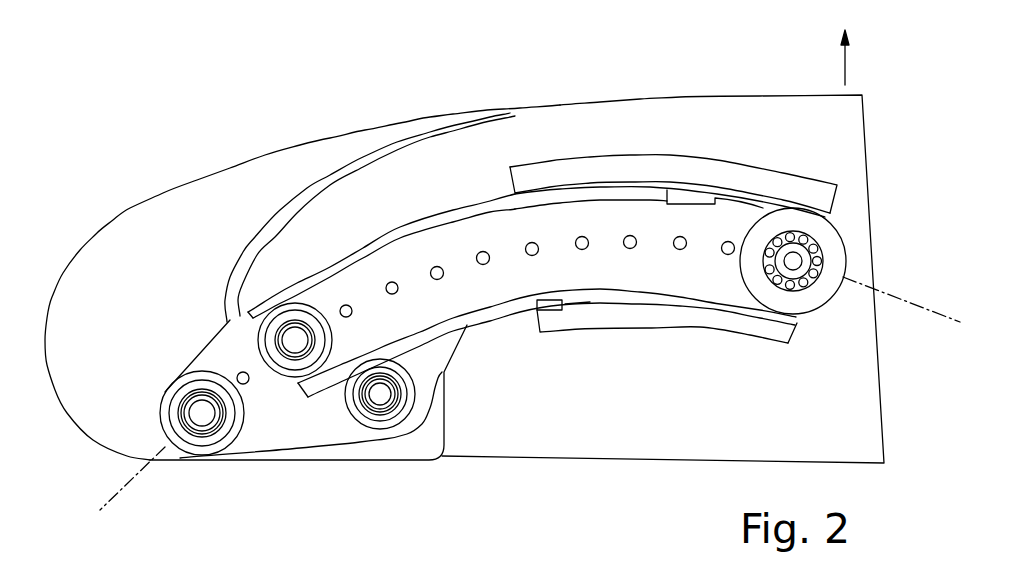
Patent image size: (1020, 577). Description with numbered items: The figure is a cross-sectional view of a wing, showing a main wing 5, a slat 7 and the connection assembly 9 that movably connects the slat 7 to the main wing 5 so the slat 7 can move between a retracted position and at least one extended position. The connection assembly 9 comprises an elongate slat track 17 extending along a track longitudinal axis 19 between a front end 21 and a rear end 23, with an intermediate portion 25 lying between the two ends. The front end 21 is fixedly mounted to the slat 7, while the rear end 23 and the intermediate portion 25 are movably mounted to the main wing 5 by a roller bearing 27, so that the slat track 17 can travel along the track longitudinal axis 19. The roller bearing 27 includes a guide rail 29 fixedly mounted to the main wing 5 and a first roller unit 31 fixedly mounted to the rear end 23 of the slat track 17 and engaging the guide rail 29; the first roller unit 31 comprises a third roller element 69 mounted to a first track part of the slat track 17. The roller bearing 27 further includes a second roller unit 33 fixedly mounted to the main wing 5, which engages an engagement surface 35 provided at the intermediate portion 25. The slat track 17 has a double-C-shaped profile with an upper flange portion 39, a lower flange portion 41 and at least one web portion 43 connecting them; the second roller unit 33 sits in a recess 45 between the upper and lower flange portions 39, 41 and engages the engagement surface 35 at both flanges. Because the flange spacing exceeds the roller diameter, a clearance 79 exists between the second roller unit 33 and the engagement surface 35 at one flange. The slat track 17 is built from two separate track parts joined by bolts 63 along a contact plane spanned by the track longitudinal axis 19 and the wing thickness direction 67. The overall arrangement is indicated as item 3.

The device 3 is at (117, 168).
The main wing 5 is at (752, 403).
The slat 7 is at (120, 324).
The connection assembly 9 is at (540, 146).
The slat track 17 is at (453, 228).
The track longitudinal axis 19 is at (938, 322).
The front end 21 is at (299, 430).
The rear end 23 is at (763, 212).
The intermediate portion 25 is at (506, 280).
The roller bearing 27 is at (549, 241).
The guide rail 29 is at (719, 172).
The first roller unit 31 is at (817, 293).
The second roller unit 33 is at (297, 312).
The engagement surface 35 is at (502, 213).
The upper flange portion 39 is at (393, 232).
The lower flange portion 41 is at (570, 293).
The web portion 43 is at (552, 267).
The recess 45 is at (596, 252).
The bolts 63 is at (346, 305).
The wing thickness direction 67 is at (848, 62).
The third roller element 69 is at (833, 248).
The clearance 79 is at (798, 326).